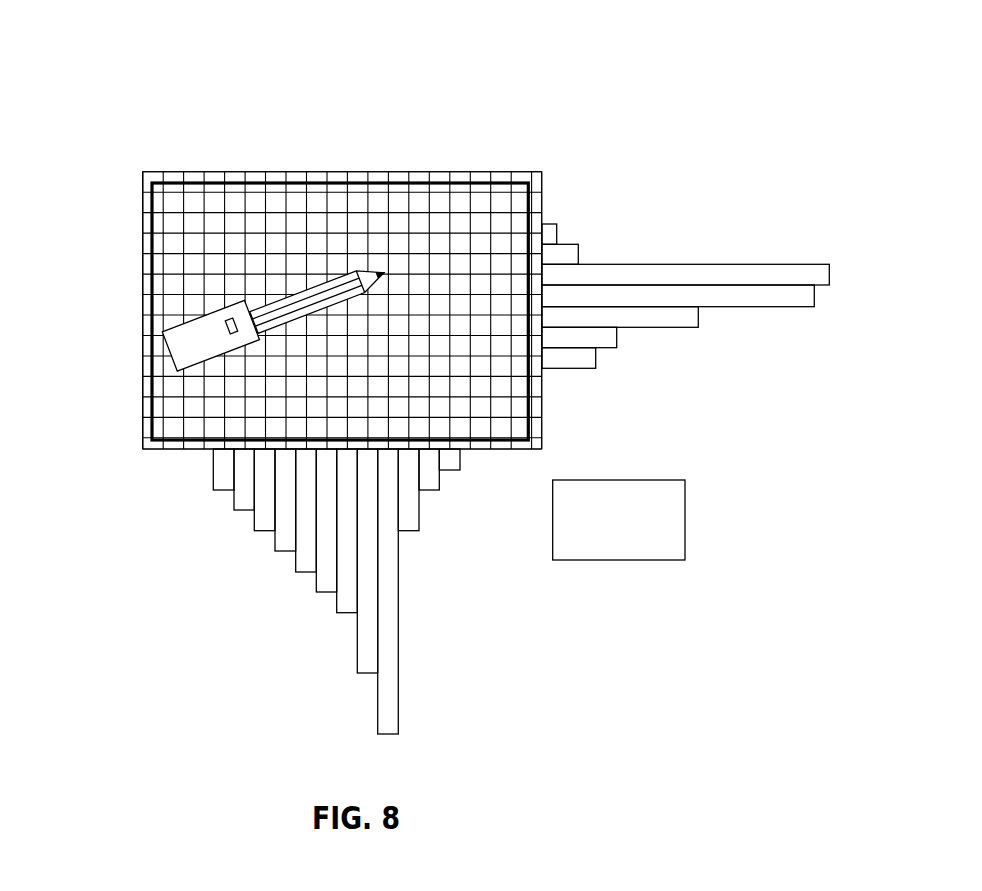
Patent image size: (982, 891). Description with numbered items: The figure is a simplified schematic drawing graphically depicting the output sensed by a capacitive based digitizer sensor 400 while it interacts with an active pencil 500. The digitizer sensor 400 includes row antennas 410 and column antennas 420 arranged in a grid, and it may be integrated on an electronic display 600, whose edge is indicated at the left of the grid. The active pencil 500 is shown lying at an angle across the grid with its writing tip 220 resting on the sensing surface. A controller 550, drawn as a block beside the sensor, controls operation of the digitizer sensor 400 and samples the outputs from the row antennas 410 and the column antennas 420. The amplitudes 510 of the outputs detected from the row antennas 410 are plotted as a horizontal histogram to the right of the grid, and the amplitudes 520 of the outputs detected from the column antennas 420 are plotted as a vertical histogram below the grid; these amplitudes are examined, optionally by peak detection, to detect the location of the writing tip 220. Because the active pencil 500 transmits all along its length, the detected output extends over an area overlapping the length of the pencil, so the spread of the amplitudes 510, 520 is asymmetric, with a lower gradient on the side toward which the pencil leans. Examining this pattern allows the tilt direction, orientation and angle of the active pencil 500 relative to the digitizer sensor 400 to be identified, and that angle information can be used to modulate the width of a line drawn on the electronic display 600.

The digitizer sensor 400 is at (397, 137).
The row antennas 410 is at (433, 233).
The column antennas 420 is at (182, 400).
The active pencil 500 is at (250, 268).
The writing tip 220 is at (385, 270).
The electronic display 600 is at (150, 287).
The amplitudes of outputs detected from row antennas 510 is at (673, 330).
The amplitudes of outputs detected from column antennas 520 is at (294, 584).
The controller 550 is at (619, 520).